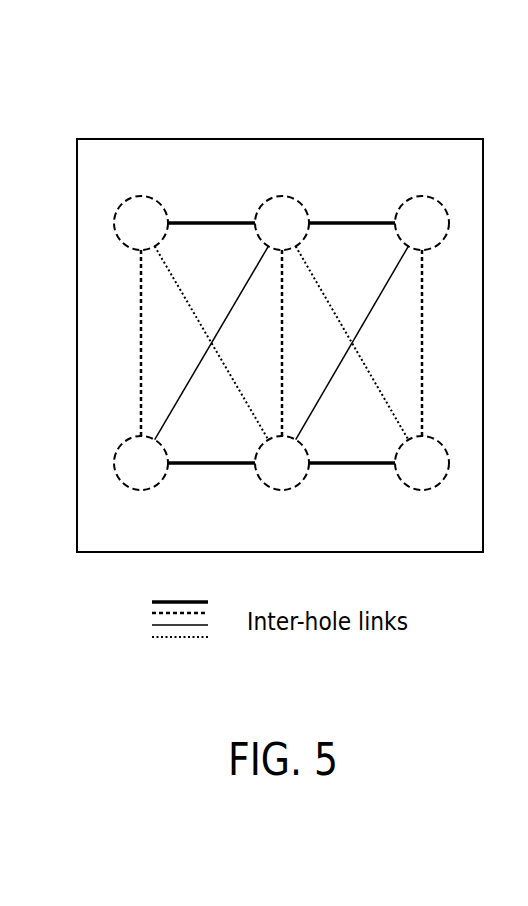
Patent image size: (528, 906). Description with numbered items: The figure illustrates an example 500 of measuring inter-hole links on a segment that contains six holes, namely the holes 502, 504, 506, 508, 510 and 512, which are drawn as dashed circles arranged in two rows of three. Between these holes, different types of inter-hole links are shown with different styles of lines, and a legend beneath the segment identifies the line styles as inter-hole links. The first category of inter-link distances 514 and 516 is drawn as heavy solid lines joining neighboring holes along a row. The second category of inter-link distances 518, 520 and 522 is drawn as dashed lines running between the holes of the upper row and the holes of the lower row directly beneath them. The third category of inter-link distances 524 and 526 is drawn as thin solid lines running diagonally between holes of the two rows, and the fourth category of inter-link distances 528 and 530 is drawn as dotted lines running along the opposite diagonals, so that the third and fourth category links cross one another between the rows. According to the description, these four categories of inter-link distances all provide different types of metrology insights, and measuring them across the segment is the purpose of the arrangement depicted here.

The inter-hole link network 500 is at (153, 84).
The hole 502 is at (152, 196).
The hole 504 is at (293, 196).
The hole 506 is at (432, 196).
The hole 508 is at (152, 490).
The hole 510 is at (290, 490).
The hole 512 is at (432, 490).
The first category inter-link distance 514 is at (211, 227).
The first category inter-link distance 516 is at (350, 227).
The second category inter-link distance 518 is at (141, 353).
The second category inter-link distance 520 is at (283, 392).
The second category inter-link distance 522 is at (422, 353).
The third category inter-link distance 524 is at (185, 388).
The third category inter-link distance 526 is at (332, 383).
The fourth category inter-link distance 528 is at (233, 383).
The fourth category inter-link distance 530 is at (377, 385).